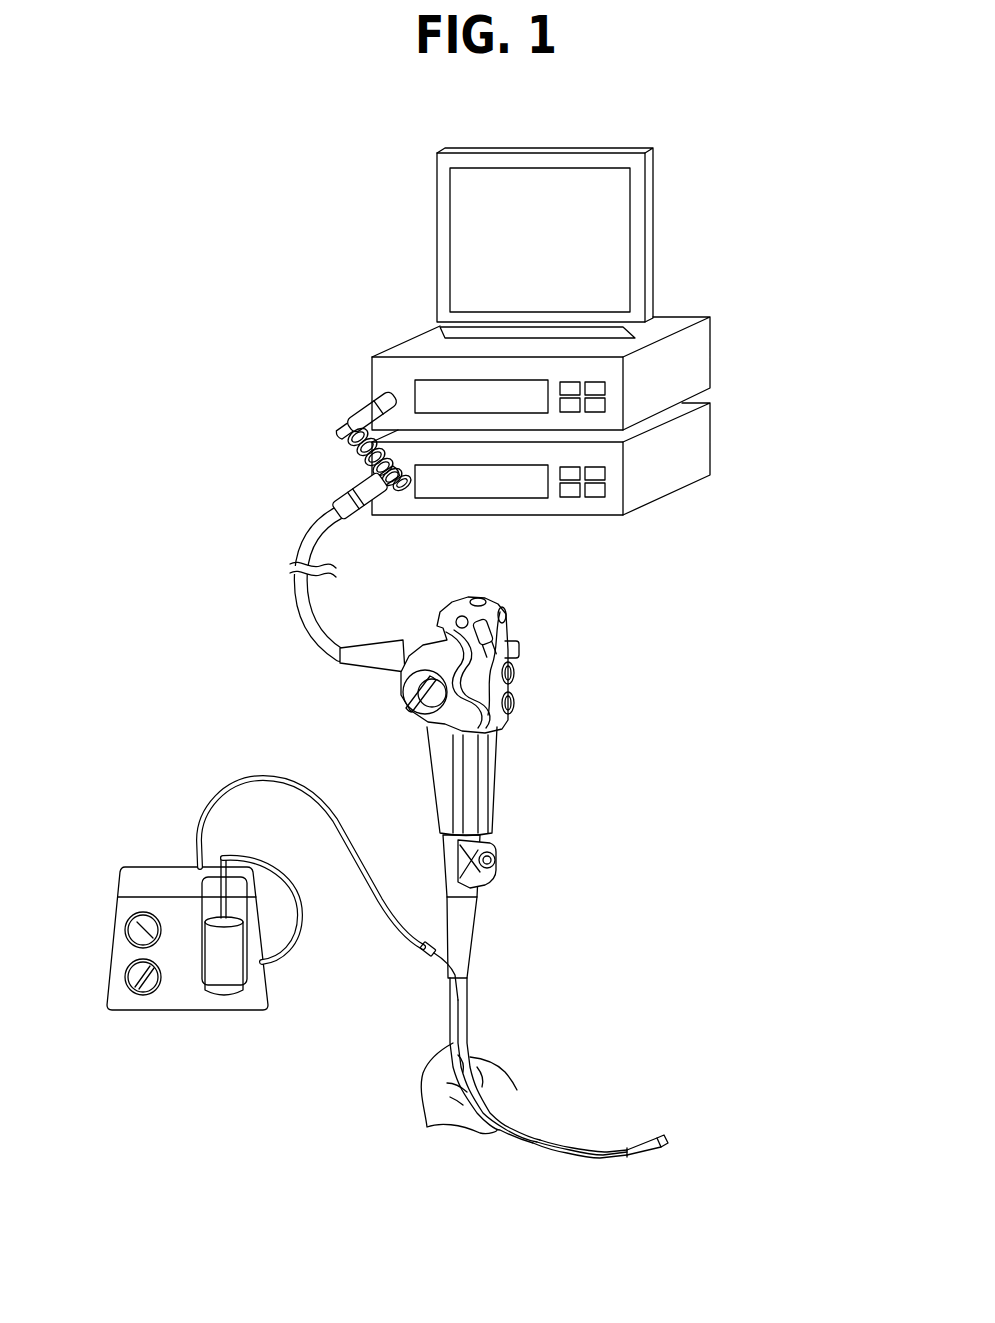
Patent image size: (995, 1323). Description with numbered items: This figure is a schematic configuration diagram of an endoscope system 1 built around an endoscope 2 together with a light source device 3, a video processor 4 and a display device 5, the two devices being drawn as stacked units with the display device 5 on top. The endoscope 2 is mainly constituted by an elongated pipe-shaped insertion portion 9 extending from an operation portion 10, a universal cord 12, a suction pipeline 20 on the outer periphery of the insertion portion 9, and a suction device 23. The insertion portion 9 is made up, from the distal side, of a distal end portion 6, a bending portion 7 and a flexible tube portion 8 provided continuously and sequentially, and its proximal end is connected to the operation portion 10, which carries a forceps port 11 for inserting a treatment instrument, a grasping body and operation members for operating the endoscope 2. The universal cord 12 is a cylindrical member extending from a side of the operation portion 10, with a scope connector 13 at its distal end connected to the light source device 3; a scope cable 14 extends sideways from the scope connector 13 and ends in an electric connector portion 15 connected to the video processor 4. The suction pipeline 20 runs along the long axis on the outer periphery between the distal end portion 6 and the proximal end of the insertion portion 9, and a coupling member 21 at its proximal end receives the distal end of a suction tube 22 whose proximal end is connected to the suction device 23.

The endoscope system 1 is at (761, 185).
The endoscope 2 is at (612, 738).
The light source device 3 is at (712, 439).
The video processor 4 is at (411, 338).
The display device 5 is at (543, 152).
The distal end portion 6 is at (655, 1136).
The bending portion 7 is at (633, 1143).
The flexible tube portion 8 is at (532, 1130).
The insertion portion 9 is at (645, 1054).
The operation portion 10 is at (518, 690).
The forceps port 11 is at (500, 862).
The universal cord 12 is at (302, 605).
The scope connector 13 is at (360, 478).
The scope cable 14 is at (347, 431).
The electric connector portion 15 is at (376, 387).
The suction pipeline 20 is at (428, 1126).
The coupling member 21 is at (424, 951).
The suction tube 22 is at (263, 779).
The suction device 23 is at (140, 876).